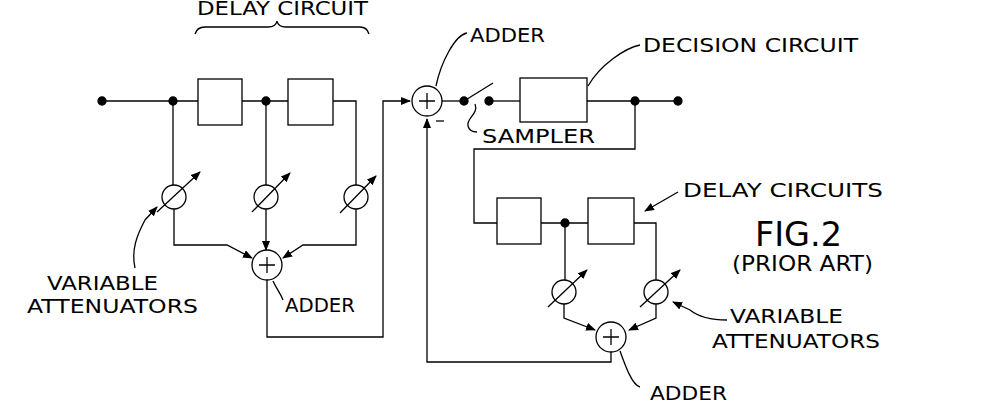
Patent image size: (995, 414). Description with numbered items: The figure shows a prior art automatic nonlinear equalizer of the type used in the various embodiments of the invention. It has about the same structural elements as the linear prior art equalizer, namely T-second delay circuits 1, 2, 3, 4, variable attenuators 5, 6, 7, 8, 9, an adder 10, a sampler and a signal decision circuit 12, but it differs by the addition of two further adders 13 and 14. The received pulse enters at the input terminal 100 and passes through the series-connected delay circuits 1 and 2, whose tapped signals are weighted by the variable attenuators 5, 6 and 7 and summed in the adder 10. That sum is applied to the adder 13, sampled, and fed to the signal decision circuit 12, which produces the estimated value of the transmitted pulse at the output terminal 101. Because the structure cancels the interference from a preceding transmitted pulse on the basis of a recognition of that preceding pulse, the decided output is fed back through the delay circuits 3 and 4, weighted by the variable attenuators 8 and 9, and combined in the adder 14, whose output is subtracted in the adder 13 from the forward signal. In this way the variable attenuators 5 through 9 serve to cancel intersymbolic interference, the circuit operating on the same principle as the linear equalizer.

The input terminal 100 is at (101, 96).
The T-second delay circuit 1 is at (217, 78).
The T-second delay circuit 2 is at (310, 78).
The variable attenuator 5 is at (163, 192).
The variable attenuator 6 is at (277, 208).
The variable attenuator 7 is at (347, 191).
The adder 10 is at (258, 280).
The adder 13 is at (429, 86).
The signal decision circuit 12 is at (555, 78).
The output terminal 101 is at (678, 101).
The T-second delay circuit 3 is at (510, 198).
The T-second delay circuit 4 is at (597, 198).
The variable attenuator 8 is at (552, 287).
The variable attenuator 9 is at (667, 293).
The adder 14 is at (627, 343).